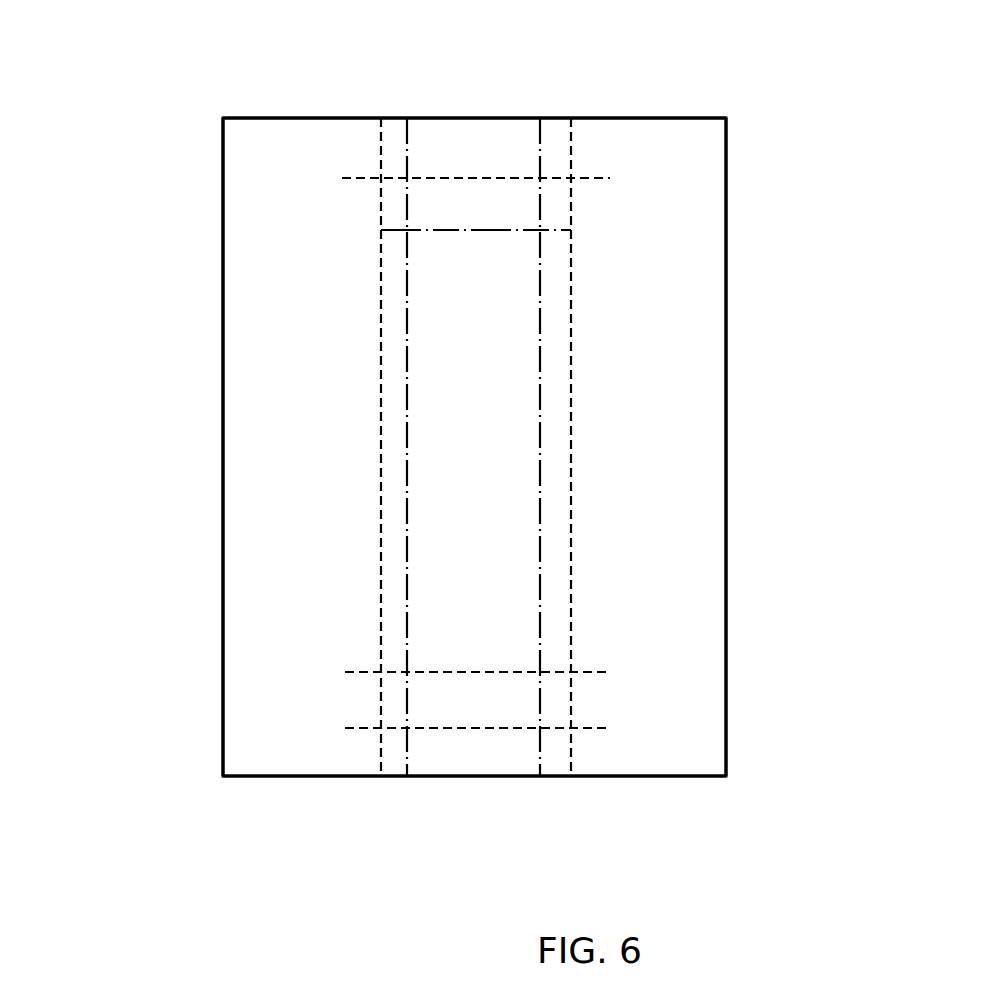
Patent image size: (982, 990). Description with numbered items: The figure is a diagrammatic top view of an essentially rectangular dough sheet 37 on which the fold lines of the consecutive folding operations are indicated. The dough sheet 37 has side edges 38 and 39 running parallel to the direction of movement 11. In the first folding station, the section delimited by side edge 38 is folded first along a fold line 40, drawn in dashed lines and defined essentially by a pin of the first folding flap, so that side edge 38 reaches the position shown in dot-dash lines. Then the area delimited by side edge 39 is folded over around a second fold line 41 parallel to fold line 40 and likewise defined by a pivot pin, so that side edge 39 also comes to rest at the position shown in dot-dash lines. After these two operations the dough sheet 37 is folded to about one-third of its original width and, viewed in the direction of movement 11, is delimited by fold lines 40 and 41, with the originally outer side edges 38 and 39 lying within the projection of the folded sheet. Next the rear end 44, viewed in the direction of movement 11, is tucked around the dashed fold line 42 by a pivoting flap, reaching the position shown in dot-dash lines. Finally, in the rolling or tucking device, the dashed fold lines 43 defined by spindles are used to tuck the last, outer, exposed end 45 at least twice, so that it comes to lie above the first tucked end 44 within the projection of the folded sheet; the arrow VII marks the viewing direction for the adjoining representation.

The dough sheet 37 is at (268, 96).
The side edge 38 is at (222, 293).
The side edge 39 is at (727, 342).
The fold line 40 is at (381, 745).
The second fold line 41 is at (571, 746).
The fold line 42 is at (585, 177).
The fold lines 43 is at (528, 702).
The rear end 44 is at (448, 117).
The exposed end 45 is at (272, 777).
The direction of movement 11 is at (478, 838).
The section view indicator VII is at (100, 472).